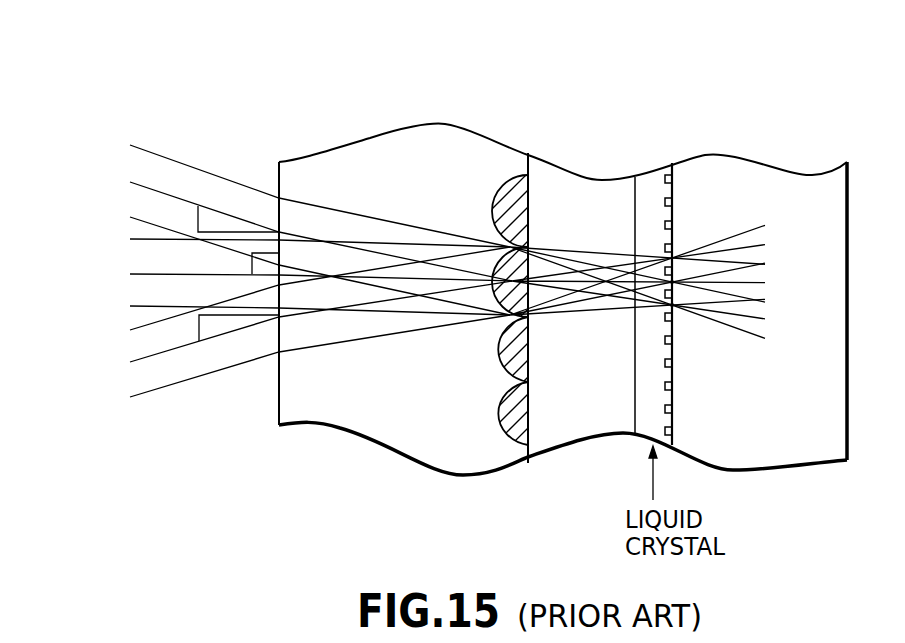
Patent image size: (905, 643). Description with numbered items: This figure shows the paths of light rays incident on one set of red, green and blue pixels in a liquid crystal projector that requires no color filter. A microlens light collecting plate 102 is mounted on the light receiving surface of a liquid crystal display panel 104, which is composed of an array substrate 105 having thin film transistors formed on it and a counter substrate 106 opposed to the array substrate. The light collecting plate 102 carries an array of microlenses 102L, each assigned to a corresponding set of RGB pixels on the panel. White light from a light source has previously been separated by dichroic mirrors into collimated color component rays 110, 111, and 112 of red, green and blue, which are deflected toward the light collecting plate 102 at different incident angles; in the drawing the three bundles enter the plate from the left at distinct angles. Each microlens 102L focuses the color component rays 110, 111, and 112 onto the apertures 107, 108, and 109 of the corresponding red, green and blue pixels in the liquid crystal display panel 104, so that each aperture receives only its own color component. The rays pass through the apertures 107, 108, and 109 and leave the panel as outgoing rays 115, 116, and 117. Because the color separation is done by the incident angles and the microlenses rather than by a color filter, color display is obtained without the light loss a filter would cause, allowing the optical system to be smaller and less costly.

The microlens light collecting plate 102 is at (344, 423).
The microlenses 102L is at (493, 413).
The liquid crystal display panel 104 is at (857, 107).
The array substrate 105 is at (816, 455).
The counter substrate 106 is at (594, 433).
The aperture of R pixel 107 is at (683, 310).
The aperture of G pixel 108 is at (676, 254).
The aperture of B pixel 109 is at (675, 310).
The R color component ray 110 is at (122, 237).
The G color component ray 111 is at (122, 325).
The B color component ray 112 is at (122, 143).
The outgoing ray 115 is at (668, 282).
The outgoing ray 116 is at (666, 265).
The outgoing ray 117 is at (667, 301).